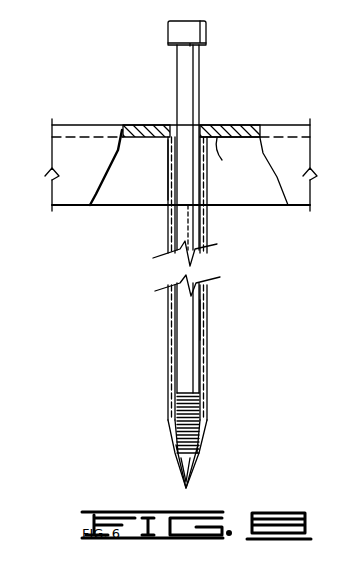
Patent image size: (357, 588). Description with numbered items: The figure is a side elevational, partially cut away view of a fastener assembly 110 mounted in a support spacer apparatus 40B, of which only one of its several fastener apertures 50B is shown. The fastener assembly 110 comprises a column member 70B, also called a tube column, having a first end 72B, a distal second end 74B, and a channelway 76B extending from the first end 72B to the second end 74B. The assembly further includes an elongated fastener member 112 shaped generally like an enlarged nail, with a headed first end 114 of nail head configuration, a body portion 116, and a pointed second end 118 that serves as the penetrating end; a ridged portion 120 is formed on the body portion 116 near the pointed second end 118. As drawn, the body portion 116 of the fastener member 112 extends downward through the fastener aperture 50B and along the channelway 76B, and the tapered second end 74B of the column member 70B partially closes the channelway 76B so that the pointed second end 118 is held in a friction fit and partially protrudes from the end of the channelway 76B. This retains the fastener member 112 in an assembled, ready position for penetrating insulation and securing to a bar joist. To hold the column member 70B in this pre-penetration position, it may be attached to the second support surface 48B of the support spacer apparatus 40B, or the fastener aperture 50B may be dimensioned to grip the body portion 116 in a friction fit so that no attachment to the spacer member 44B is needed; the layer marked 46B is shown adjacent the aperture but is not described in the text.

The fastener assembly 110 is at (176, 71).
The fastener member 112 is at (190, 76).
The headed first end 114 is at (192, 25).
The body portion 116 is at (185, 227).
The pointed second end 118 is at (187, 462).
The ridged portion 120 is at (193, 410).
The support spacer apparatus 40B is at (103, 124).
The spacer member 44B is at (163, 126).
The second layer 46B is at (240, 128).
The second support surface 48B is at (217, 140).
The fastener aperture 50B is at (203, 126).
The column member 70B is at (205, 227).
The first end 72B is at (168, 175).
The second end 74B is at (205, 436).
The channelway 76B is at (198, 325).